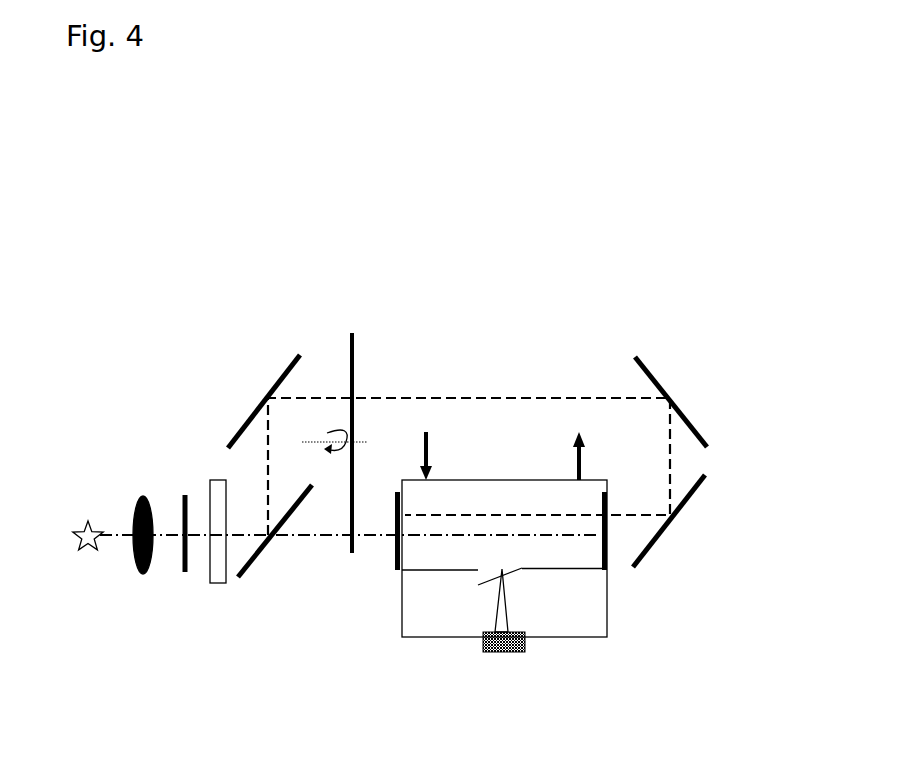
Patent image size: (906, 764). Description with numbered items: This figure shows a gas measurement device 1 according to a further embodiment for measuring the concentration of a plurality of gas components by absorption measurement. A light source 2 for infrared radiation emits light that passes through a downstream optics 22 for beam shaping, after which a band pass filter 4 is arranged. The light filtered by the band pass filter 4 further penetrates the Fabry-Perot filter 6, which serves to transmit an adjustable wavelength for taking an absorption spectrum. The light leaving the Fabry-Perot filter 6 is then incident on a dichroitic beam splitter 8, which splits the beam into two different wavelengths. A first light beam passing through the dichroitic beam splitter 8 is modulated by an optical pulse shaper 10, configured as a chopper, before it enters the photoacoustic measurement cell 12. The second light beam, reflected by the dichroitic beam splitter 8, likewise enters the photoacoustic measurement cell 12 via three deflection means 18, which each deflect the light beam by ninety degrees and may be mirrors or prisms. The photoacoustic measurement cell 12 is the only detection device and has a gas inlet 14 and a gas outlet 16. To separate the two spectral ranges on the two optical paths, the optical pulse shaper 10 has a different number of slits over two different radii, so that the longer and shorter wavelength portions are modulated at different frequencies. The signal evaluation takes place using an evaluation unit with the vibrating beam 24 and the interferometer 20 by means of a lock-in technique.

The gas measurement device 1 is at (493, 236).
The light source 2 is at (78, 528).
The optics 22 is at (138, 497).
The band pass filter 4 is at (185, 572).
The Fabry-Perot filter 6 is at (218, 585).
The dichroitic beam splitter 8 is at (260, 555).
The optical pulse shaper 10 is at (350, 350).
The deflection means 18 is at (248, 418).
The gas inlet 14 is at (427, 443).
The gas outlet 16 is at (582, 453).
The photoacoustic measurement cell 12 is at (607, 612).
The vibrating beam 24 is at (510, 572).
The interferometer 20 is at (502, 653).